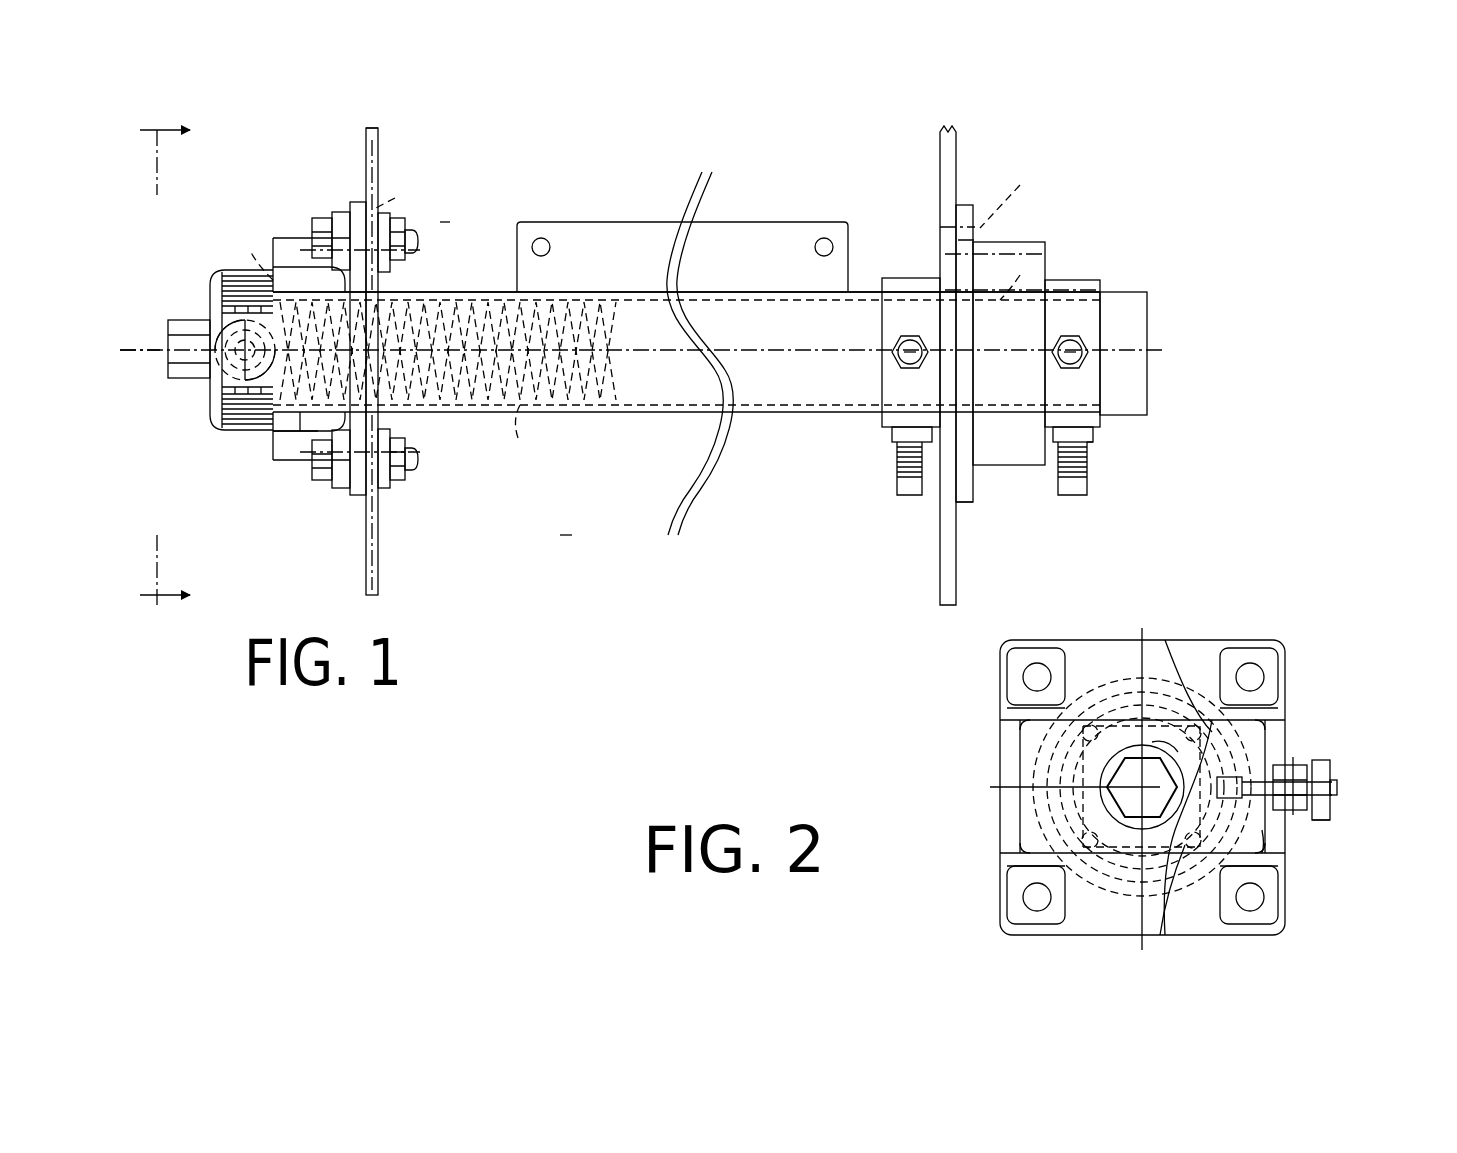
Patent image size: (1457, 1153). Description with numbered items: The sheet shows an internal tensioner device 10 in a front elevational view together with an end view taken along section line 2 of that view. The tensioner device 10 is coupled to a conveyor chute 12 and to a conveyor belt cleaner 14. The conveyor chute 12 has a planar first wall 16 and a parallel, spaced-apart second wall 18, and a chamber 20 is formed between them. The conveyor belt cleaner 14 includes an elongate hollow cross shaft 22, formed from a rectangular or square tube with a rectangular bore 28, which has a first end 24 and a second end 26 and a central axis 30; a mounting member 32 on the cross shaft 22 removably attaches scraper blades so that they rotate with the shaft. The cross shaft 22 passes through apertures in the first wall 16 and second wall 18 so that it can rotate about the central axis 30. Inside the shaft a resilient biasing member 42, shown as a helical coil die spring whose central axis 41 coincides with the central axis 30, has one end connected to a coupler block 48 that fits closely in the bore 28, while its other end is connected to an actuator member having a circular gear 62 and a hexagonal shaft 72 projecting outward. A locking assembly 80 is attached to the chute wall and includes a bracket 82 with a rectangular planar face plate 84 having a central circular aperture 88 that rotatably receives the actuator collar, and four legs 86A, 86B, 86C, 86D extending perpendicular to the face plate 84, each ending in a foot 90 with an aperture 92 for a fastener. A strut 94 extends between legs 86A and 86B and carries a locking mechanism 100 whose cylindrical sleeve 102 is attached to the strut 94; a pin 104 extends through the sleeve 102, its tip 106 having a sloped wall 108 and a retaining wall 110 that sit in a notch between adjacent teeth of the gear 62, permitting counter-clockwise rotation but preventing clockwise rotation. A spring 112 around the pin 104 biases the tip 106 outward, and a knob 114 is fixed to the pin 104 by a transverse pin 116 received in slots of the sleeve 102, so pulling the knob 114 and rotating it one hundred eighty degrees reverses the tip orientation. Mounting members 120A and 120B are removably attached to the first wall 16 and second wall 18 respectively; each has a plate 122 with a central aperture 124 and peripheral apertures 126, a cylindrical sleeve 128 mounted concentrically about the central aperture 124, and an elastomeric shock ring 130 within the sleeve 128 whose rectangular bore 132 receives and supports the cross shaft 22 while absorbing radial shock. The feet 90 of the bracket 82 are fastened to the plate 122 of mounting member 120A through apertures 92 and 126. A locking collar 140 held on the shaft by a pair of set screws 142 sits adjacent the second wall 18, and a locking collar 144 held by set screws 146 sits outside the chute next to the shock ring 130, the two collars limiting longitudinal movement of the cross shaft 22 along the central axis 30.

In FIG. 1, the section line 2— 2 is at (164, 363).
In FIG. 1, the tensioner device 10 is at (462, 212).
In FIG. 1, the conveyor chute 12 is at (362, 145).
In FIG. 1, the conveyor belt cleaner 14 is at (780, 418).
In FIG. 1, the first wall 16 is at (364, 544).
In FIG. 1, the second wall 18 is at (958, 150).
In FIG. 1, the chamber 20 is at (570, 545).
In FIG. 1, the cross shaft 22 is at (640, 413).
In FIG. 1, the first end 24 is at (262, 440).
In FIG. 1, the second end 26 is at (1127, 292).
In FIG. 1, the bore 28 is at (686, 412).
In FIG. 1, the central axis 30 is at (775, 350).
In FIG. 1, the mounting member 32 is at (770, 240).
In FIG. 1, the central axis 41 is at (136, 350).
In FIG. 1, the biasing member 42 is at (520, 438).
In FIG. 1, the coupler block 48 is at (615, 386).
In FIG. 2, the gear 62 is at (1040, 748).
In FIG. 1, the hexagonal shaft 72 is at (178, 382).
In FIG. 1, the locking assembly 80 is at (233, 396).
In FIG. 2, the locking assembly 80 is at (1355, 771).
In FIG. 1, the bracket 82 is at (212, 278).
In FIG. 2, the bracket 82 is at (1008, 830).
In FIG. 2, the face plate 84 is at (1028, 800).
In FIG. 2, the leg 86A is at (1262, 645).
In FIG. 1, the leg 86B is at (300, 440).
In FIG. 2, the leg 86B is at (1240, 918).
In FIG. 2, the leg 86C is at (1020, 868).
In FIG. 2, the leg 86D is at (1015, 705).
In FIG. 1, the aperture 88 is at (222, 392).
In FIG. 2, the aperture 88 is at (1172, 762).
In FIG. 2, the foot 90 is at (1058, 652).
In FIG. 2, the aperture 92 is at (1025, 665).
In FIG. 2, the strut 94 is at (1262, 840).
In FIG. 1, the locking mechanism 100 is at (222, 326).
In FIG. 2, the locking mechanism 100 is at (1331, 760).
In FIG. 2, the sleeve 102 is at (1268, 808).
In FIG. 2, the pin 104 is at (1340, 797).
In FIG. 2, the tip 106 is at (1148, 935).
In FIG. 2, the sloped wall 108 is at (1165, 935).
In FIG. 2, the retaining wall 110 is at (1170, 652).
In FIG. 2, the spring 112 is at (1265, 762).
In FIG. 2, the knob 114 is at (1333, 821).
In FIG. 2, the transverse pin 116 is at (1296, 767).
In FIG. 1, the mounting member 120A is at (271, 238).
In FIG. 2, the mounting member 120A is at (1193, 638).
In FIG. 1, the mounting member 120B is at (976, 502).
In FIG. 1, the plate 122 is at (355, 205).
In FIG. 1, the central aperture 124 is at (380, 288).
In FIG. 1, the peripheral aperture 126 is at (396, 197).
In FIG. 1, the sleeve 128 is at (318, 218).
In FIG. 1, the shock ring 130 is at (272, 280).
In FIG. 2, the shock ring 130 is at (1130, 780).
In FIG. 1, the bore 132 is at (1052, 300).
In FIG. 1, the locking collar 140 is at (880, 430).
In FIG. 1, the set screws 142 is at (905, 352).
In FIG. 1, the locking collar 144 is at (1100, 428).
In FIG. 1, the set screws 146 is at (1078, 352).